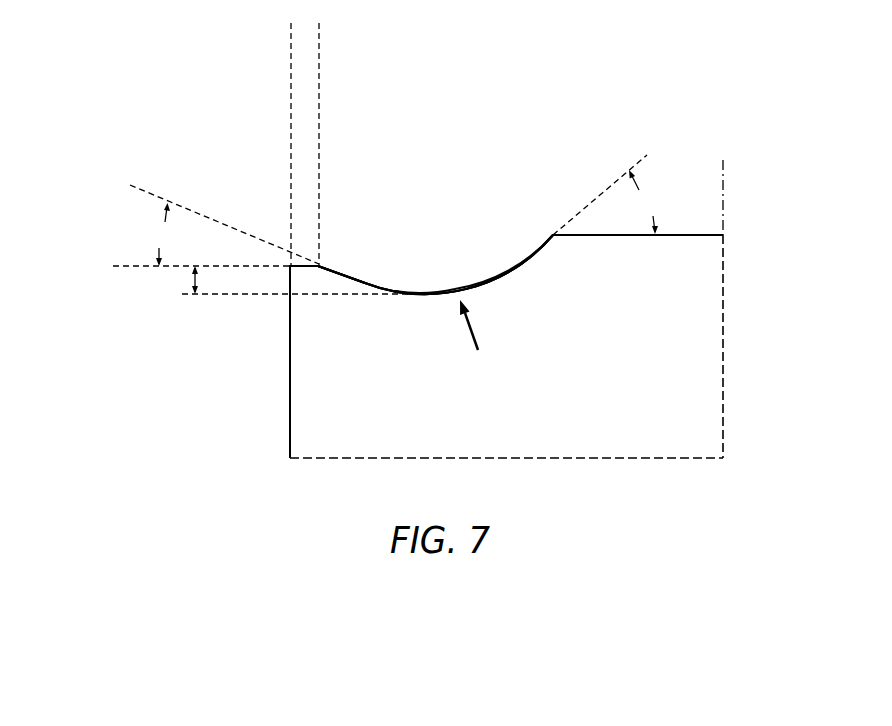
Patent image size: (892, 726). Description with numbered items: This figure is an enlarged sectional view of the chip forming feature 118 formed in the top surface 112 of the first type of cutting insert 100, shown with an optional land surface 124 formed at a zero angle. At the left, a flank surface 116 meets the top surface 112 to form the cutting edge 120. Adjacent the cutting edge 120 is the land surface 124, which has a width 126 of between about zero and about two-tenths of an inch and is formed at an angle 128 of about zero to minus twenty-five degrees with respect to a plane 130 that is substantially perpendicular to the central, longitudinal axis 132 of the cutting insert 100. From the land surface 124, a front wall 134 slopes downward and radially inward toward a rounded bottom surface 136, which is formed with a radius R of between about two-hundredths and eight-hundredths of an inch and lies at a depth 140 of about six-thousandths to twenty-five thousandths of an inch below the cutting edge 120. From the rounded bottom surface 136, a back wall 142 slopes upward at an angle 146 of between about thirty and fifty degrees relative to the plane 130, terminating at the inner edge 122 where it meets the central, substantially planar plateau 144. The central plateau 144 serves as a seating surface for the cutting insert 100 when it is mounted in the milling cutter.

The cutting insert 100 is at (676, 56).
The top surface 112 is at (551, 132).
The flank surface 116 is at (289, 340).
The chip forming feature 118 is at (399, 160).
The cutting edge 120 is at (290, 264).
The inner edge 122 is at (553, 233).
The land surface 124 is at (300, 262).
The width 126 is at (385, 43).
The angle 128 is at (163, 234).
The plane 130 is at (135, 266).
The central, longitudinal axis 132 is at (726, 190).
The front wall 134 is at (343, 272).
The rounded bottom surface 136 is at (427, 292).
The depth 140 is at (193, 281).
The back wall 142 is at (520, 258).
The central plateau 144 is at (695, 234).
The angle 146 is at (648, 202).
The radius R is at (475, 341).